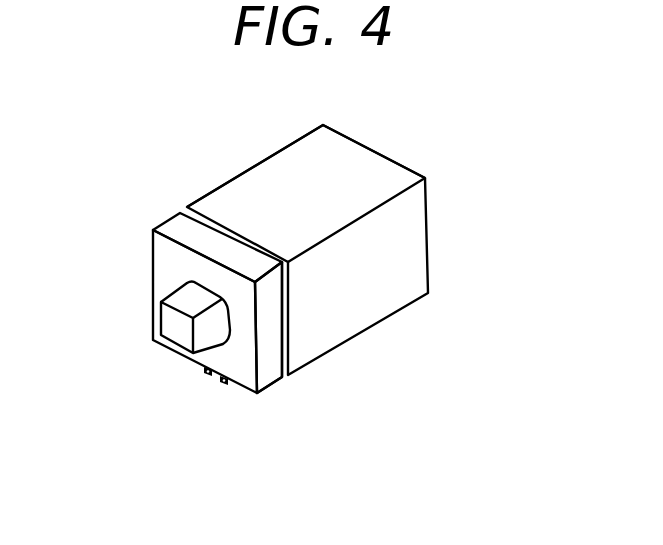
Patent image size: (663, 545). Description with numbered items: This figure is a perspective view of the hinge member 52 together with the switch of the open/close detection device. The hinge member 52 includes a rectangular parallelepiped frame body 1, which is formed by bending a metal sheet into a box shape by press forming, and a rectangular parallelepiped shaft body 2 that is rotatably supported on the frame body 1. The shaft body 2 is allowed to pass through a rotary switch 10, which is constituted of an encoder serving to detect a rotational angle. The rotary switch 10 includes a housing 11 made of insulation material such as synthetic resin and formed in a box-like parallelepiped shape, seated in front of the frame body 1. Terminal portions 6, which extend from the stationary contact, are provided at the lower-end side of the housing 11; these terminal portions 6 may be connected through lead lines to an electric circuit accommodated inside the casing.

The frame body 1 is at (382, 292).
The shaft body 2 is at (173, 317).
The terminal portions 6 is at (224, 386).
The rotary switch 10 is at (160, 217).
The housing 11 is at (270, 365).
The hinge member 52 is at (279, 144).